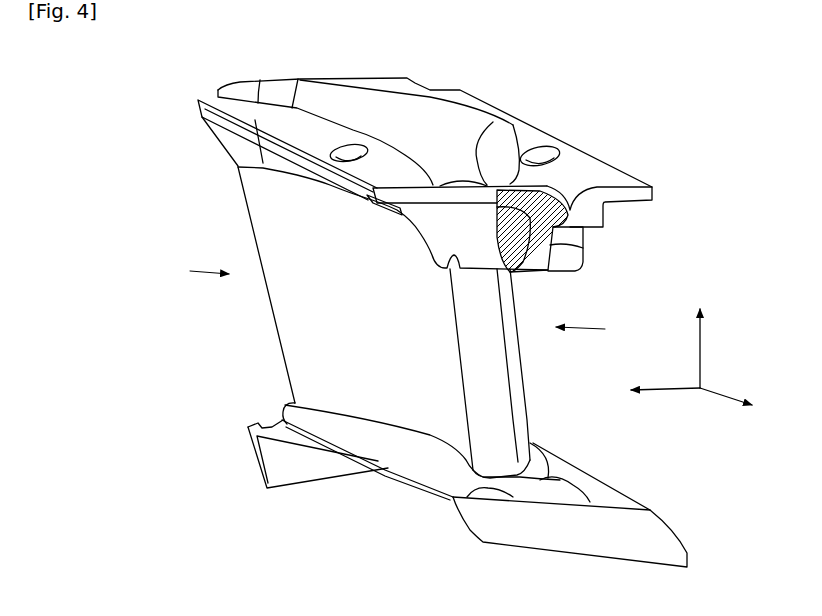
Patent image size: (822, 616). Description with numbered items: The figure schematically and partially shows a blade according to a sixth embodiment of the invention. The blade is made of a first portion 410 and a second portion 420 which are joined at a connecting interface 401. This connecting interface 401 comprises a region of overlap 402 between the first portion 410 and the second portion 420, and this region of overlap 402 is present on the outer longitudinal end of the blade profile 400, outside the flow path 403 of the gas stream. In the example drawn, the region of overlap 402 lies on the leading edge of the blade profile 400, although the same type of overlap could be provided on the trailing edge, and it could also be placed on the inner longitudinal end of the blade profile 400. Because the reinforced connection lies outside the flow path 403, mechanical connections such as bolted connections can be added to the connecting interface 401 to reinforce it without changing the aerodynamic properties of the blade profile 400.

The blade profile 400 is at (411, 316).
The connecting interface 401 is at (560, 246).
The region of overlap 402 is at (545, 195).
The flow path 403 is at (262, 312).
The first portion 410 is at (520, 133).
The second portion 420 is at (277, 128).